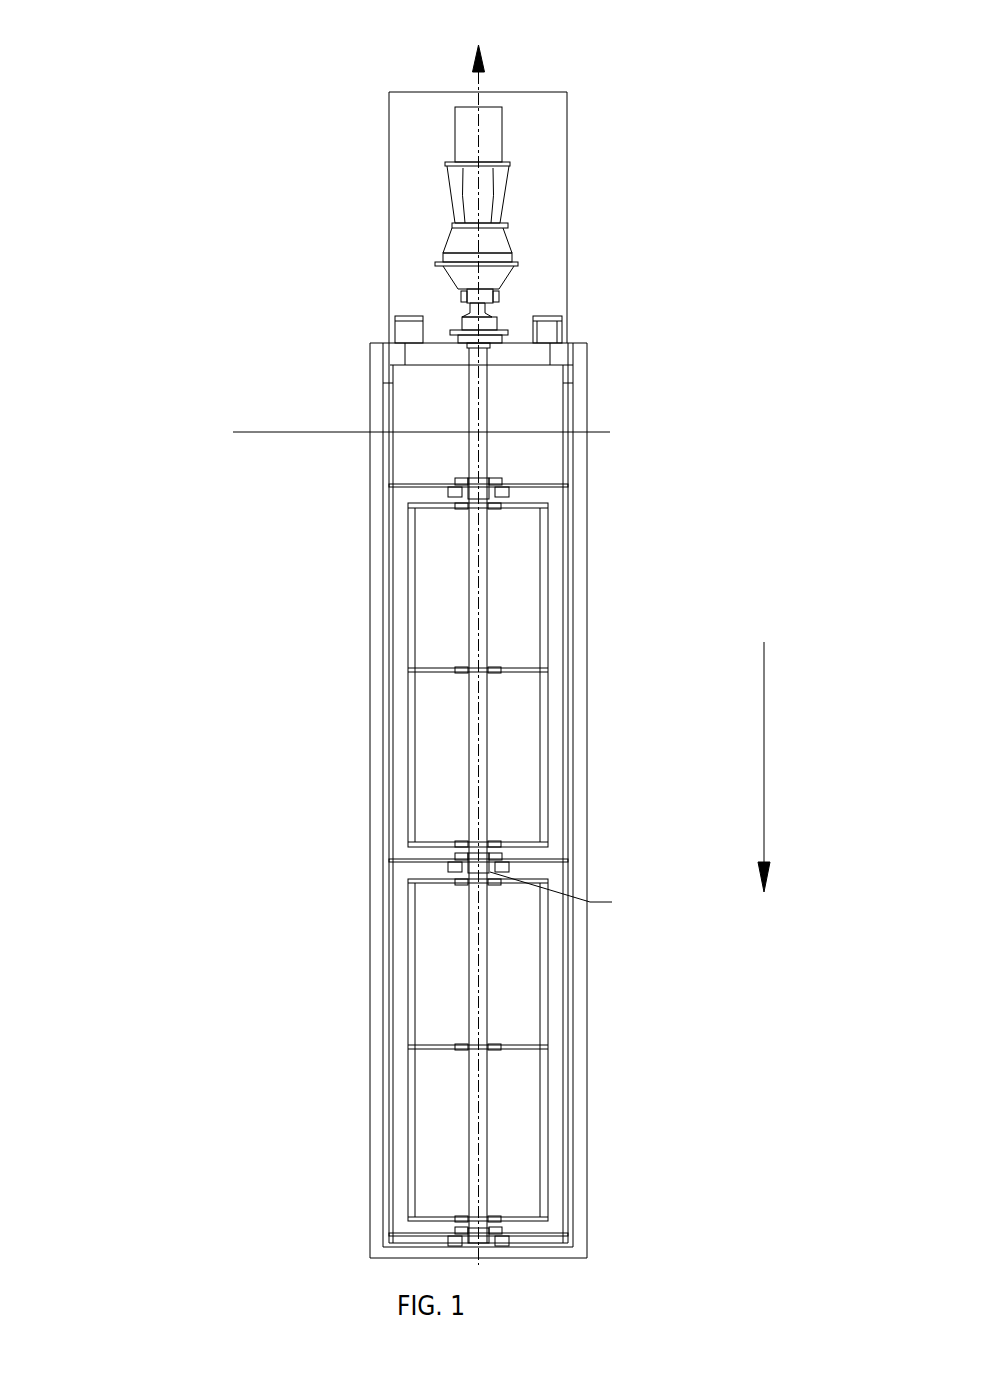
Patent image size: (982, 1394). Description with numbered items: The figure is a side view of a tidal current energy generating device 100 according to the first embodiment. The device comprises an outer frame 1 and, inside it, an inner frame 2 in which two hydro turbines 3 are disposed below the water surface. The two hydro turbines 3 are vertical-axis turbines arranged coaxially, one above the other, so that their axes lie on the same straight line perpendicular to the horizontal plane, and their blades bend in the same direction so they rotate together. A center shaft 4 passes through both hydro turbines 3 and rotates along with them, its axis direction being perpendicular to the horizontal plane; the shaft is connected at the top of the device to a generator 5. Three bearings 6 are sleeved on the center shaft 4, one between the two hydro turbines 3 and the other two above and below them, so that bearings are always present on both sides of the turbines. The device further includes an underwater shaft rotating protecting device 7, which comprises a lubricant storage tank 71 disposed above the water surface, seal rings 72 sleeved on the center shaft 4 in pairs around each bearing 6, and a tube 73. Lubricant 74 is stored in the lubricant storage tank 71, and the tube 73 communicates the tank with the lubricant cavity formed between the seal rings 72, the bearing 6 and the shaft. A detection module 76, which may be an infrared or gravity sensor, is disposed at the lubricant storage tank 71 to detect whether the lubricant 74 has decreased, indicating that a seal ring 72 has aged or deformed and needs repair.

The tidal current energy generating device 100 is at (235, 164).
The outer frame 1 is at (586, 698).
The inner frame 2 is at (571, 745).
The hydro turbine 3 is at (428, 758).
The center shaft 4 is at (485, 605).
The generator 5 is at (510, 250).
The bearing 6 is at (457, 497).
The underwater shaft rotating protecting device 7 is at (707, 175).
The lubricant storage tank 71 is at (562, 330).
The seal ring 72 is at (487, 476).
The tube 73 is at (568, 380).
The lubricant 74 is at (545, 329).
The detection module 76 is at (395, 318).